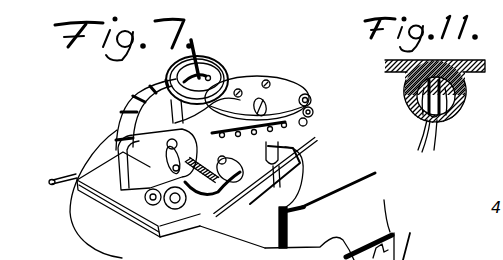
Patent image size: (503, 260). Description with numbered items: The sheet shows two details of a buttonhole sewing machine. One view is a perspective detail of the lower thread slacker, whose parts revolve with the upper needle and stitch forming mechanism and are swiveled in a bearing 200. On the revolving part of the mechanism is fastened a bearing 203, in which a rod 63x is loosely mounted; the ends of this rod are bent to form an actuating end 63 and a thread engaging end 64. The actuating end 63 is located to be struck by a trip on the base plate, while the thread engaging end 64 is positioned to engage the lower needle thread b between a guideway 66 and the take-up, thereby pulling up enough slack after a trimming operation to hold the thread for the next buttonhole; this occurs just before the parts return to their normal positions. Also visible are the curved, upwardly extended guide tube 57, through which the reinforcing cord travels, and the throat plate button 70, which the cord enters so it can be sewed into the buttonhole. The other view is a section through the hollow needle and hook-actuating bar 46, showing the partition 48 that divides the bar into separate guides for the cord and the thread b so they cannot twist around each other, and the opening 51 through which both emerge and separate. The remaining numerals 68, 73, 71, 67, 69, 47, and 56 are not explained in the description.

In FIG. 7, the bearing 203 is at (80, 182).
In FIG. 7, the base plate 68 is at (88, 187).
In FIG. 7, the actuating end 63 is at (61, 178).
In FIG. 7, the guide tube 57 is at (125, 112).
In FIG. 7, the bracket 73 is at (178, 127).
In FIG. 7, the throat plate button 70 is at (222, 70).
In FIG. 7, the pointer 71 is at (200, 75).
In FIG. 7, the plate 67 is at (216, 106).
In FIG. 7, the guideway 66 is at (311, 108).
In FIG. 7, the lower needle thread b is at (272, 147).
In FIG. 7, the thread engaging end 64 is at (300, 160).
In FIG. 7, the spring 69 is at (226, 164).
In FIG. 7, the bearing 200 is at (287, 215).
In FIG. 7, the rod 63x is at (215, 243).
In FIG. 11, the partition 48 is at (404, 97).
In FIG. 11, the bushing 47 is at (467, 100).
In FIG. 11, the hollow needle and hook-actuating bar 46 is at (450, 122).
In FIG. 11, the opening 51 is at (414, 145).
In FIG. 11, the wire 56 is at (442, 147).